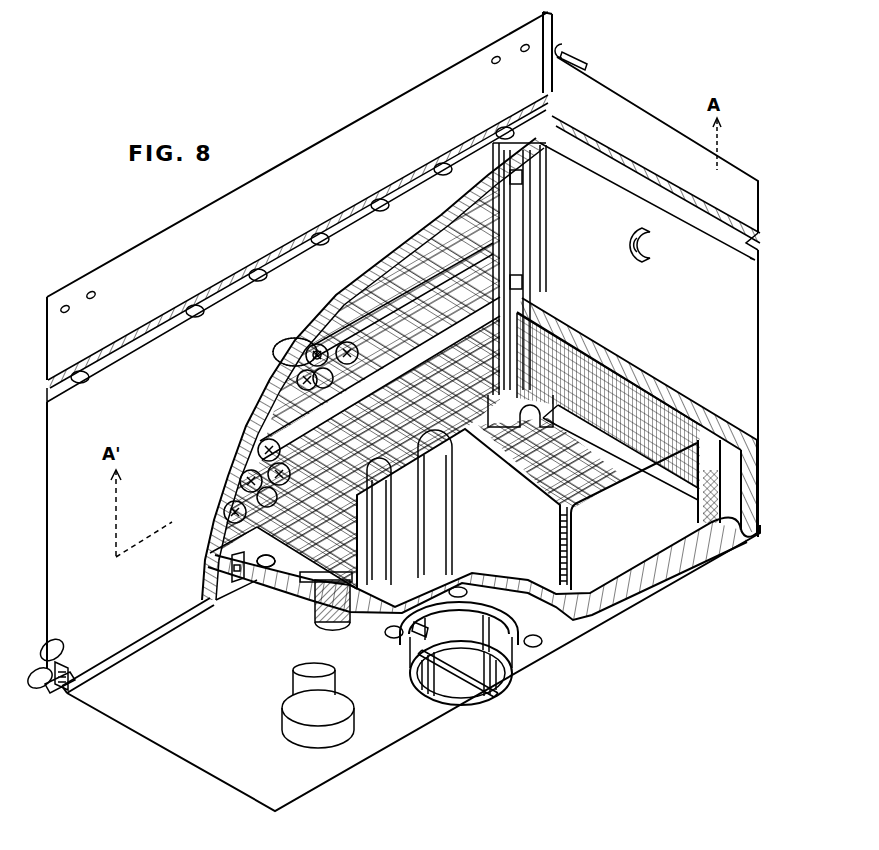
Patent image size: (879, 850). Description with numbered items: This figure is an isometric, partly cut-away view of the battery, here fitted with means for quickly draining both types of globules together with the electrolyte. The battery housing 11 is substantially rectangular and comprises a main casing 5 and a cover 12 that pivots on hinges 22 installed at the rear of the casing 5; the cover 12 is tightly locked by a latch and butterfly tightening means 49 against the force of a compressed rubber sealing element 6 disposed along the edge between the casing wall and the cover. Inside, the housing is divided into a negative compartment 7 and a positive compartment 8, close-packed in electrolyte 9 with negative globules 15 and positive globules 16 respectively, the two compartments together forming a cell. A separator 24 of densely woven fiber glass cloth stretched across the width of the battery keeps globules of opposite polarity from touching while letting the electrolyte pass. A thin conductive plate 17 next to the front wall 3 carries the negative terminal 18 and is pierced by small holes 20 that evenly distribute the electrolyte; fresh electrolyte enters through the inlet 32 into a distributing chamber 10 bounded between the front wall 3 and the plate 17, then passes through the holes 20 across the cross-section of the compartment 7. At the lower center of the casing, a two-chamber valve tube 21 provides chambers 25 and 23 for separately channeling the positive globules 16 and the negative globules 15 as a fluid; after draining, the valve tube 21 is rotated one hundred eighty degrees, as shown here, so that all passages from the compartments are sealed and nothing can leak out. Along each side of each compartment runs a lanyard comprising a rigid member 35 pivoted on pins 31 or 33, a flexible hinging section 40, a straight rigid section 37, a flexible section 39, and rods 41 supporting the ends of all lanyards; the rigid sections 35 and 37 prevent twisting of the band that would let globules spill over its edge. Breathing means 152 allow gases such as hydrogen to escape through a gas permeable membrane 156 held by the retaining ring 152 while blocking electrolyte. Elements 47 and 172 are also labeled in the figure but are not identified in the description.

The front wall 3 is at (204, 701).
The main casing 5 is at (674, 331).
The rubber sealing element 6 is at (232, 580).
The negative compartment 7 is at (692, 396).
The positive compartment 8 is at (477, 268).
The electrolyte 9 is at (345, 330).
The distributing chamber 10 is at (298, 585).
The battery housing 11 is at (661, 92).
The cover 12 is at (215, 515).
The negative globules 15 is at (272, 452).
The positive globules 16 is at (292, 392).
The conductive plate 17 is at (417, 180).
The negative terminal 18 is at (318, 628).
The small holes 20 is at (265, 568).
The two-chamber valve tube 21 is at (513, 677).
The hinges 22 is at (576, 54).
The valve chamber 23 is at (482, 668).
The separator 24 is at (475, 258).
The valve chamber 25 is at (454, 690).
The pin 31 is at (388, 640).
The inlet 32 is at (298, 708).
The pin 33 is at (467, 592).
The rigid member 35 is at (508, 526).
The straight rigid section 37 is at (624, 541).
The flexible section 39 is at (686, 478).
The flexible hinging section 40 is at (588, 613).
The rods 41 is at (520, 411).
The clip 47 is at (656, 252).
The latch and butterfly tightening means 49 is at (84, 650).
The breathing means 152 is at (293, 334).
The gas permeable membrane 156 is at (282, 362).
The pointer 172 is at (317, 347).